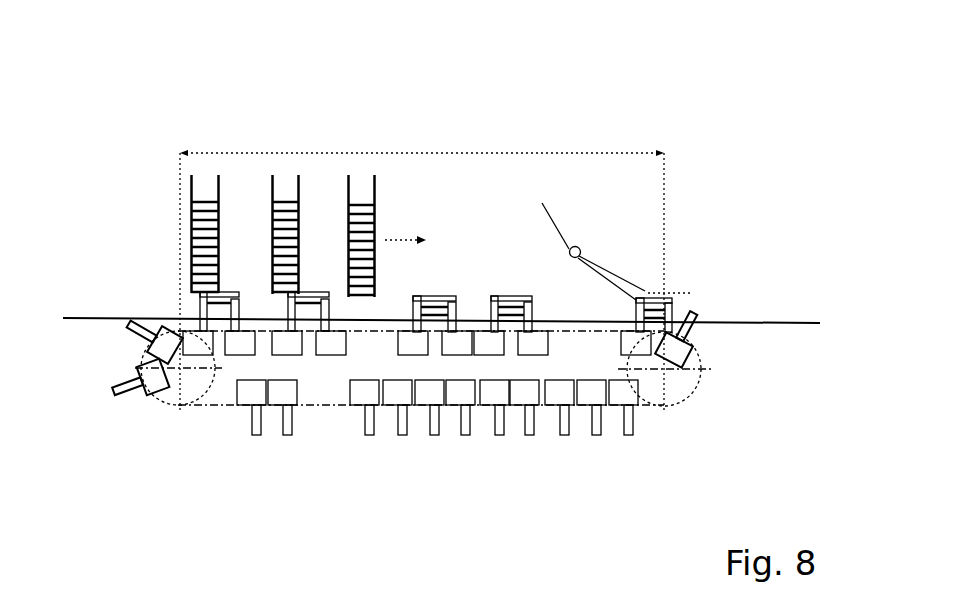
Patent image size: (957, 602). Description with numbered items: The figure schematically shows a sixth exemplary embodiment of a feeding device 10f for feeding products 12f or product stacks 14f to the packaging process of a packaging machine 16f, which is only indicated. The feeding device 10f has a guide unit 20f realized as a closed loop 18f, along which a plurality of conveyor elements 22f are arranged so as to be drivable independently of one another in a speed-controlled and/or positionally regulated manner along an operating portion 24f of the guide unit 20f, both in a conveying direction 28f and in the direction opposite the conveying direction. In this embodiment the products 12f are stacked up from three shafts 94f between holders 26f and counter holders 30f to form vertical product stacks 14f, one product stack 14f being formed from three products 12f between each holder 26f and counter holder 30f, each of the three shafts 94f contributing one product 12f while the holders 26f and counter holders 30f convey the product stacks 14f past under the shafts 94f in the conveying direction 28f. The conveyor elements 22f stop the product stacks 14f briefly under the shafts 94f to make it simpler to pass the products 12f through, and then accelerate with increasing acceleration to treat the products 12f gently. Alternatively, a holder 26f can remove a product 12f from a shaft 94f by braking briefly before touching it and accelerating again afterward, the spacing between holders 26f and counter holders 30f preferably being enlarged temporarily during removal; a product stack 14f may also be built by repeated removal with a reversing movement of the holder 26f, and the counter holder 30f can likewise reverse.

The feeding device 10f is at (675, 211).
The products 12f is at (200, 204).
The product stacks 14f is at (442, 284).
The packaging machine 16f is at (590, 230).
The closed loop 18f is at (210, 405).
The guide unit 20f is at (136, 408).
The conveyor elements 22f is at (468, 335).
The operating portion 24f is at (552, 155).
The holders 26f is at (197, 313).
The conveying direction 28f is at (395, 237).
The counter holders 30f is at (240, 307).
The shafts 94f is at (264, 168).